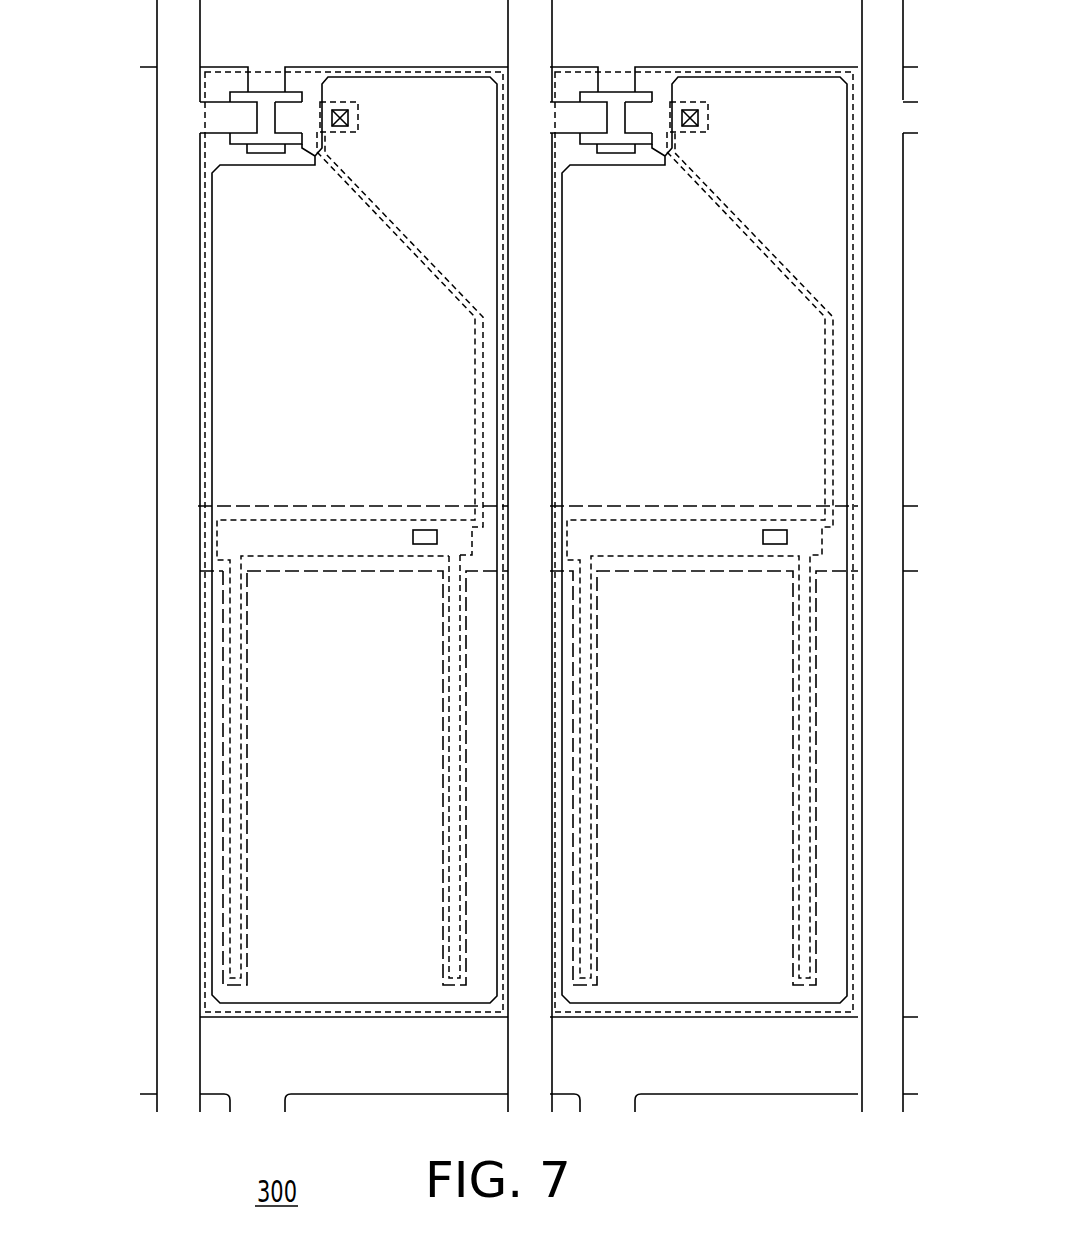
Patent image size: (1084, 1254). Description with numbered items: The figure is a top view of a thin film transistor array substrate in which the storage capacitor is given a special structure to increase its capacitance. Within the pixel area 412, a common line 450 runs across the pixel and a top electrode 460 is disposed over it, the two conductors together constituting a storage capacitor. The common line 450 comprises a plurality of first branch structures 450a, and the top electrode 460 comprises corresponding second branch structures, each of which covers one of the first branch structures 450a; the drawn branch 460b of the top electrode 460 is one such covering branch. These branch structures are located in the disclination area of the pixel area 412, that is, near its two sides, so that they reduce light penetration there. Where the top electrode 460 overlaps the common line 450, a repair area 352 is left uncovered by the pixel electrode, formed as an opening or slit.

The pixel area 412 is at (514, 141).
The repair area 352 is at (431, 519).
The common line 450 is at (200, 513).
The first branch structure 450a is at (222, 725).
The top electrode 460 is at (347, 540).
The common electrode branch 460b is at (448, 790).